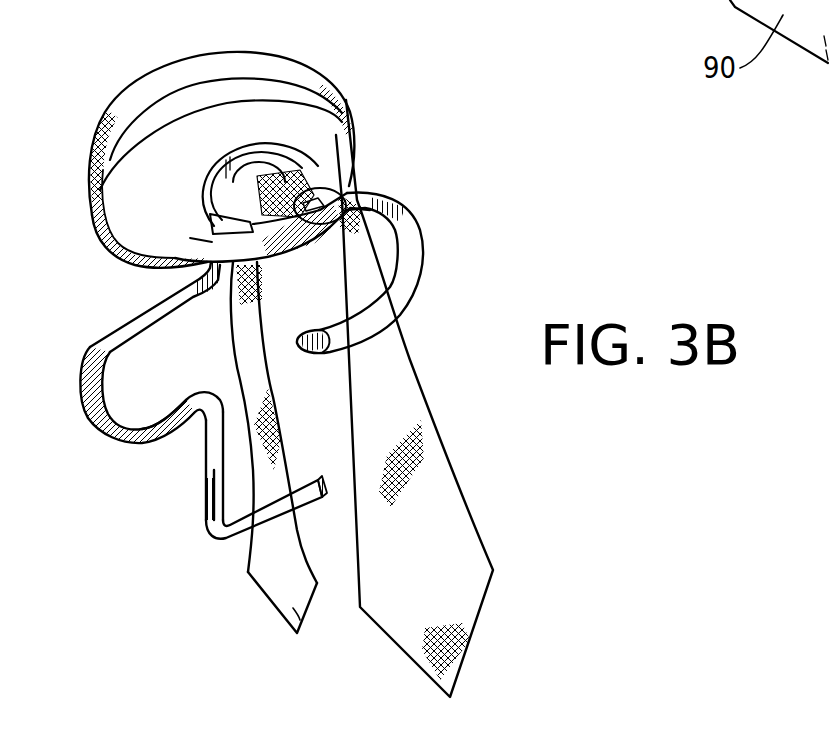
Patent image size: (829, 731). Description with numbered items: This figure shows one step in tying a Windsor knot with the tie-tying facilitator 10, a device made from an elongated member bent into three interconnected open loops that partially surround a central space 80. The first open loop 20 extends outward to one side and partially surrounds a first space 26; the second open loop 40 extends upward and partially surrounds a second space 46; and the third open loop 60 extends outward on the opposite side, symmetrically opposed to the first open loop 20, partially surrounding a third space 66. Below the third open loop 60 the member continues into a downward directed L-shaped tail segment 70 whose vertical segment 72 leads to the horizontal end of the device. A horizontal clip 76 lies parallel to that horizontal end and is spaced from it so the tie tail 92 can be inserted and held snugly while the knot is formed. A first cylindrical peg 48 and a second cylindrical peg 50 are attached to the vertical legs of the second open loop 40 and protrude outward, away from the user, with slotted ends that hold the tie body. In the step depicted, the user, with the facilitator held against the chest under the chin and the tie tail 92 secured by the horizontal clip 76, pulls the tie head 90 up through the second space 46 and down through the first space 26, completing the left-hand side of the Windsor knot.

The tie-tying facilitator 10 is at (117, 440).
The first open loop 20 is at (413, 235).
The first space 26 is at (387, 252).
The second open loop 40 is at (251, 150).
The second space 46 is at (245, 173).
The first cylindrical peg 48 is at (310, 190).
The second cylindrical peg 50 is at (212, 223).
The third open loop 60 is at (102, 383).
The third space 66 is at (183, 375).
The L-shaped tail segment 70 is at (203, 534).
The vertical segment 72 is at (222, 487).
The horizontal clip 76 is at (247, 577).
The central space 80 is at (310, 314).
The tie head 90 is at (453, 513).
The tie tail 92 is at (295, 612).